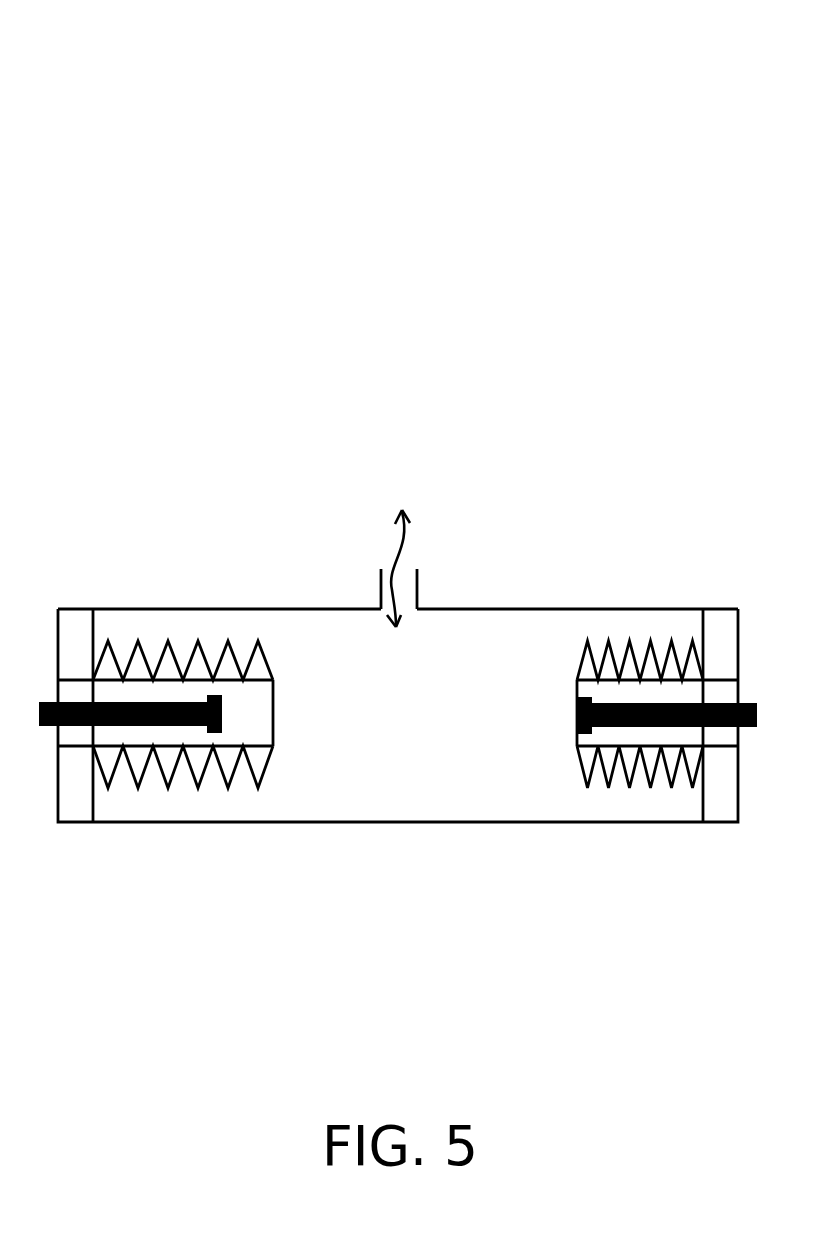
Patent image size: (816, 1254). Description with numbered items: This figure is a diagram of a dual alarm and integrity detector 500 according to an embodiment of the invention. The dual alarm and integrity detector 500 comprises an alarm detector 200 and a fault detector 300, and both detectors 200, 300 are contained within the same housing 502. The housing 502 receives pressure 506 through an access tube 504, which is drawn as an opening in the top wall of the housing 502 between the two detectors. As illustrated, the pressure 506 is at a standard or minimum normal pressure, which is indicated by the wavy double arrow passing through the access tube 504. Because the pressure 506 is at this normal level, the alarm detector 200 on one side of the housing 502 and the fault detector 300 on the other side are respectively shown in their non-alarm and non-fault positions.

The dual alarm and integrity detector 500 is at (534, 156).
The housing 502 is at (128, 607).
The access tube 504 is at (418, 582).
The pressure 506 is at (390, 583).
The alarm detector 200 is at (300, 850).
The fault detector 300 is at (742, 850).